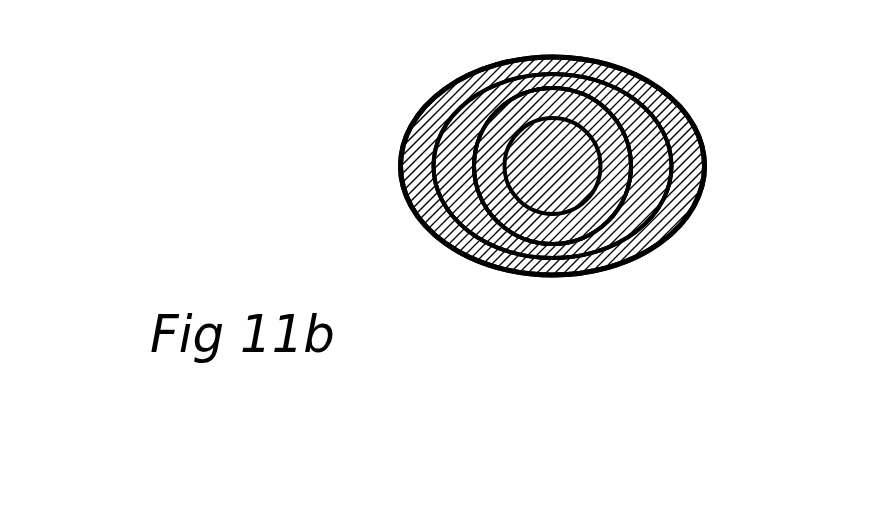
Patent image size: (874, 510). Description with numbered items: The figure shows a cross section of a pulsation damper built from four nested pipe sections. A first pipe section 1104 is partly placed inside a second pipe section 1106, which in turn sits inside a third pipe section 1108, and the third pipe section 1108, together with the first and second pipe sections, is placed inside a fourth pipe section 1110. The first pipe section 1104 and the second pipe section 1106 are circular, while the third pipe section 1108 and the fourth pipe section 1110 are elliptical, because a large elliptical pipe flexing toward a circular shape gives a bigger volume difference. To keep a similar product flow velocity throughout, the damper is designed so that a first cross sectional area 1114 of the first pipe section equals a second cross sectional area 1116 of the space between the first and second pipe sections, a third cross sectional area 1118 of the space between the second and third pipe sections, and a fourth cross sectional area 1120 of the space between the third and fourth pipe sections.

The first pipe section 1104 is at (482, 133).
The second pipe section 1106 is at (473, 135).
The third pipe section 1108 is at (432, 183).
The fourth pipe section 1110 is at (445, 245).
The first cross sectional area 1114 is at (587, 153).
The second cross sectional area 1116 is at (621, 173).
The third cross sectional area 1118 is at (624, 223).
The fourth cross sectional area 1120 is at (625, 253).